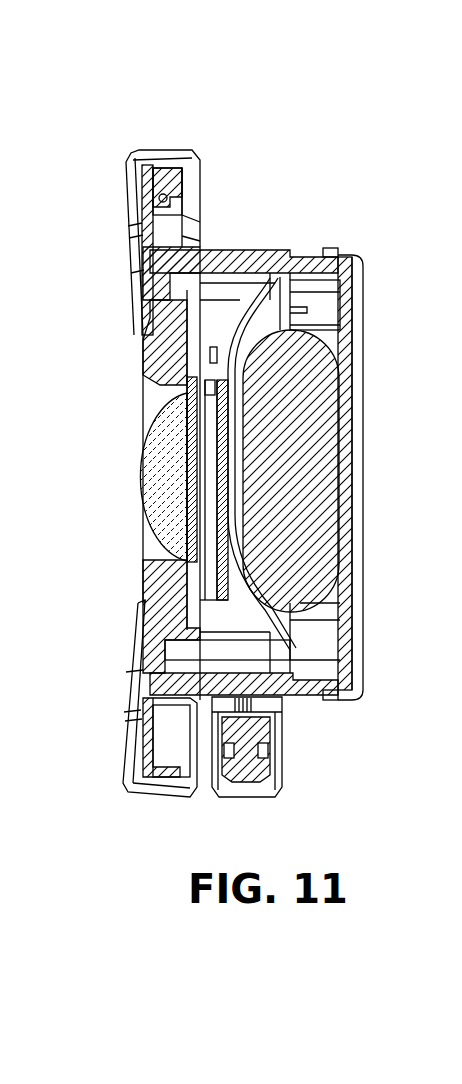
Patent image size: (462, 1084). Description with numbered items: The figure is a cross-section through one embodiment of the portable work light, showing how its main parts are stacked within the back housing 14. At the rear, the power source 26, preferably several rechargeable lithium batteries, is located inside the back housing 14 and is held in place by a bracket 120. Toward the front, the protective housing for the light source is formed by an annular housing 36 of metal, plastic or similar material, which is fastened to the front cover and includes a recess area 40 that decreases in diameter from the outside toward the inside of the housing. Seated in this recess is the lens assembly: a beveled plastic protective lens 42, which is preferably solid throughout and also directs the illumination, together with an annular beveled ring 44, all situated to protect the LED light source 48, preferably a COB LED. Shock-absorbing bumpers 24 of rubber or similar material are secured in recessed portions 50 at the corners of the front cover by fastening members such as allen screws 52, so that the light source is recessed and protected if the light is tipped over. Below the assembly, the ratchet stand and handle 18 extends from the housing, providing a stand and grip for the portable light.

The back housing 14 is at (303, 257).
The ratchet stand and handle 18 is at (283, 735).
The bumpers 24 is at (123, 168).
The power source 26 is at (308, 450).
The annular housing 36 is at (168, 355).
The recess area 40 is at (177, 390).
The beveled plastic protective lens 42 is at (143, 477).
The annular beveled ring 44 is at (203, 530).
The LED light source 48 is at (212, 502).
The recessed portions 50 is at (170, 177).
The allen screws 52 is at (160, 195).
The bracket 120 is at (280, 318).